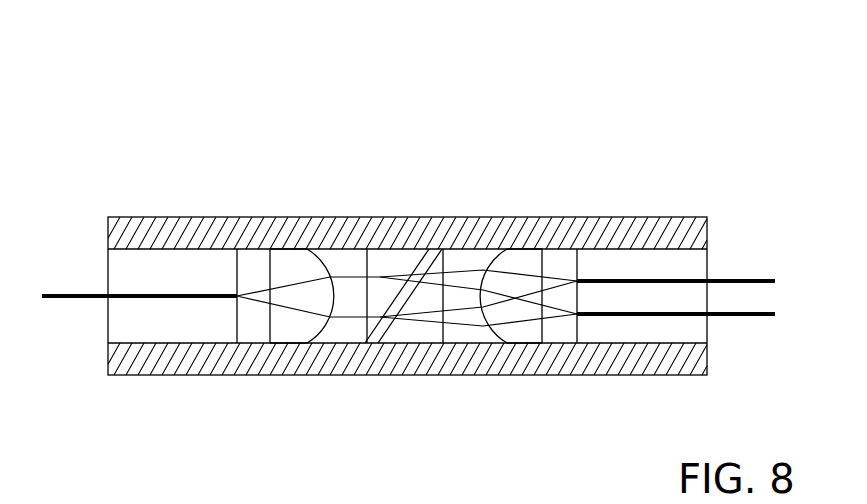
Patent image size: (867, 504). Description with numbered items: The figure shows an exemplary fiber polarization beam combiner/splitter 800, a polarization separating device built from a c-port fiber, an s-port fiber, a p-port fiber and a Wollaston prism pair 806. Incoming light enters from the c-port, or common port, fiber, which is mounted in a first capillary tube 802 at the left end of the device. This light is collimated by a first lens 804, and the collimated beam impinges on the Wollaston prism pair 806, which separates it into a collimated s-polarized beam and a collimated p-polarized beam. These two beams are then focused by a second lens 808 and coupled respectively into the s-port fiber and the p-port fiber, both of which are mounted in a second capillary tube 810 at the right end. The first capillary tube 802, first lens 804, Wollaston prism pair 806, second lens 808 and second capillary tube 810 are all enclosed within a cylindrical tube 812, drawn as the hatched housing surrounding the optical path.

The fiber polarization beam combiner/splitter 800 is at (138, 73).
The first capillary tube 802 is at (173, 263).
The first lens 804 is at (285, 263).
The Wollaston prism pair 806 is at (400, 262).
The second lens 808 is at (528, 265).
The second capillary tube 810 is at (643, 265).
The cylindrical tube 812 is at (482, 218).